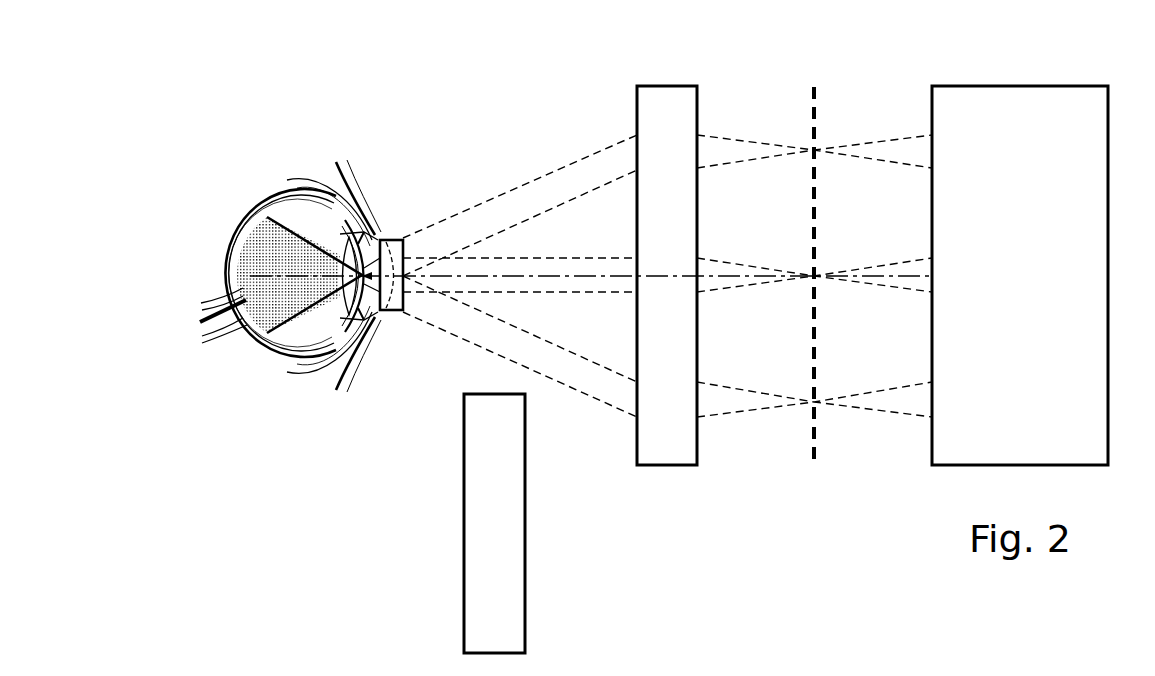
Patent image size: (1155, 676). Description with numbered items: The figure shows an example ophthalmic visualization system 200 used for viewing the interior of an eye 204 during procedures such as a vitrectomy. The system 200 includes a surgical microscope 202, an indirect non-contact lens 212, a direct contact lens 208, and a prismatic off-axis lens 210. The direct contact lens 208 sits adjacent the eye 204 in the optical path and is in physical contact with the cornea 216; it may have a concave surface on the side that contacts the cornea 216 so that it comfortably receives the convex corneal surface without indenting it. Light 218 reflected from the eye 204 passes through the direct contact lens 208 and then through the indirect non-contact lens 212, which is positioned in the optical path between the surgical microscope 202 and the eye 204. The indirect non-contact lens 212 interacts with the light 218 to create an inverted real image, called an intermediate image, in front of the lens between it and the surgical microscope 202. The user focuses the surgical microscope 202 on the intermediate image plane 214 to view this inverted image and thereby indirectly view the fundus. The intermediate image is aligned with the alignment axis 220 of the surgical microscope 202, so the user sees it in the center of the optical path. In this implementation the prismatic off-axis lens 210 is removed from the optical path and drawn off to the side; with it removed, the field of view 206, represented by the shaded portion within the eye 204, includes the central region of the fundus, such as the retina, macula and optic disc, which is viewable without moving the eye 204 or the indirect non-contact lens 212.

The ophthalmic visualization system 200 is at (365, 86).
The surgical microscope 202 is at (998, 289).
The eye 204 is at (252, 357).
The field of view 206 is at (252, 258).
The direct contact lens 208 is at (403, 312).
The prismatic off-axis lens 210 is at (464, 523).
The indirect non-contact lens 212 is at (668, 86).
The intermediate image plane 214 is at (816, 94).
The cornea 216 is at (388, 240).
The light 218 is at (516, 188).
The alignment axis 220 is at (613, 272).